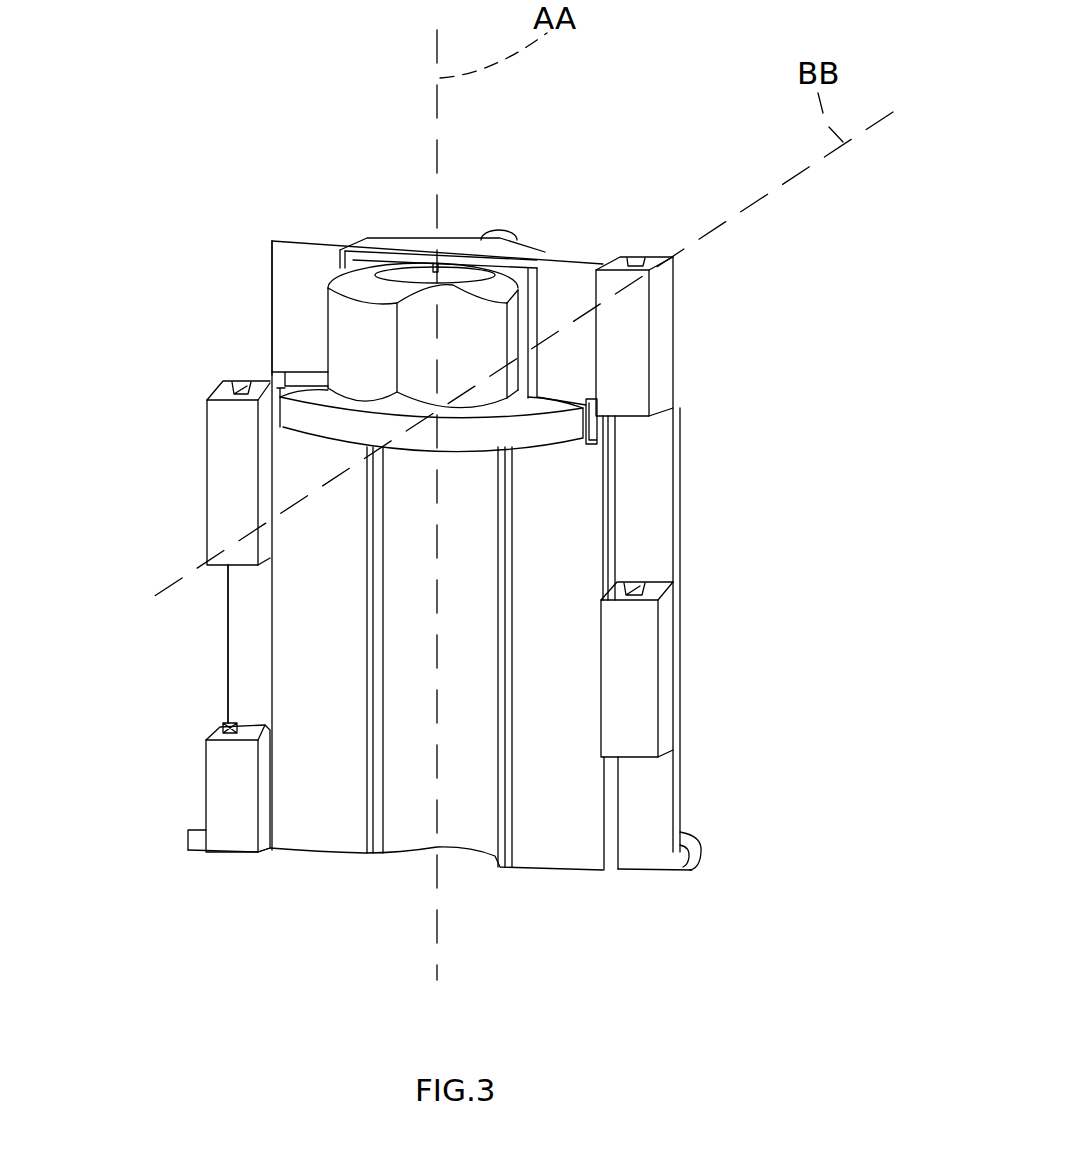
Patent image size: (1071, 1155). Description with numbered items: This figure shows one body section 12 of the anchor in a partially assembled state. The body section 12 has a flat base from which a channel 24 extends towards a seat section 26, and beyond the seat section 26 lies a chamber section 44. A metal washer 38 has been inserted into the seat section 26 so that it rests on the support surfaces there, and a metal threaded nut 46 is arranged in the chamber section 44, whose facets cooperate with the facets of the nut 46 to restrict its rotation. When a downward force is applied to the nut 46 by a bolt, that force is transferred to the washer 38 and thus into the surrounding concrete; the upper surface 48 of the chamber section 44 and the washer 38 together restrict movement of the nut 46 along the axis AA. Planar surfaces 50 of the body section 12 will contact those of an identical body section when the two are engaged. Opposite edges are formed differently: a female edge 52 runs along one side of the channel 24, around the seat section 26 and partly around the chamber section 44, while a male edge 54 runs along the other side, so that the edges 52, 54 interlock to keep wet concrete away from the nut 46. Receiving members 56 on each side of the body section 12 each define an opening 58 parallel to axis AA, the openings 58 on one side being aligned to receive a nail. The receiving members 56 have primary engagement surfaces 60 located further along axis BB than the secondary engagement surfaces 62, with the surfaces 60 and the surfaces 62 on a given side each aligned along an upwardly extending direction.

The body section 12 is at (662, 310).
The channel 24 is at (469, 830).
The seat section 26 is at (300, 368).
The washer 38 is at (547, 432).
The chamber section 44 is at (472, 245).
The threaded nut 46 is at (570, 287).
The upper surface 48 is at (405, 278).
The planar surfaces 50 is at (483, 312).
The female edge 52 is at (372, 630).
The male edge 54 is at (500, 570).
The receiving members 56 is at (692, 350).
The opening 58 is at (643, 263).
The primary engagement surfaces 60 is at (623, 375).
The secondary engagement surfaces 62 is at (653, 500).